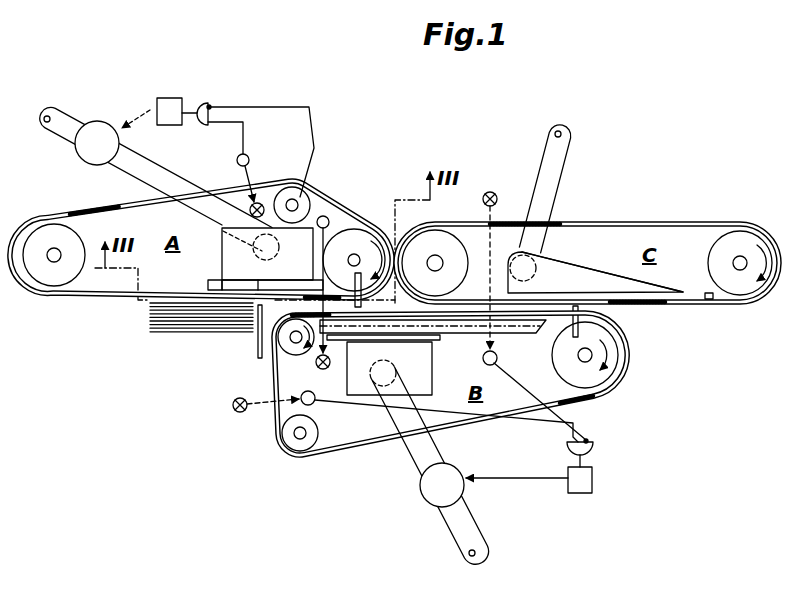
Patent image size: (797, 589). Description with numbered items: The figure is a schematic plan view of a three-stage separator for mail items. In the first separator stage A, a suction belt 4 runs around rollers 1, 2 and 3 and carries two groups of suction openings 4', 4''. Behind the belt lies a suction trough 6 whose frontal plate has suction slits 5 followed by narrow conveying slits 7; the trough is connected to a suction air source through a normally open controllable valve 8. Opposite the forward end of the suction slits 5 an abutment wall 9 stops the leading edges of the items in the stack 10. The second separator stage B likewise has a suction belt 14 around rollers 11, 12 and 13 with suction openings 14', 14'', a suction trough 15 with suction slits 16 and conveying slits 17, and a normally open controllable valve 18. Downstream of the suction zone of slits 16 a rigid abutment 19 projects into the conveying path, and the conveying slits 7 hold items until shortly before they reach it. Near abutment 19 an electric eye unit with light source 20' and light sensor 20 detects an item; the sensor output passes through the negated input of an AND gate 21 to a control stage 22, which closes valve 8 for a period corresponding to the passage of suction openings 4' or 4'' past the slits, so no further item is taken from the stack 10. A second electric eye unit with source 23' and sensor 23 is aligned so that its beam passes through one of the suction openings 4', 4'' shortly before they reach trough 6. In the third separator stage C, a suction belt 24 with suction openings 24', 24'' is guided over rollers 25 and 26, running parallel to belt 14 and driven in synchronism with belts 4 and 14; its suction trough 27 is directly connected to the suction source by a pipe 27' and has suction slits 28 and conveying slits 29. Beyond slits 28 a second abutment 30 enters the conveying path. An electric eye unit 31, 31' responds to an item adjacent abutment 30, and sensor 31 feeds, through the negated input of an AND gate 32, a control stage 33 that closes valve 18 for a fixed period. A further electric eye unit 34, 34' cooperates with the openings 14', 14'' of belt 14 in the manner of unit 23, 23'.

The roller 1 is at (366, 238).
The roller 2 is at (300, 196).
The roller 3 is at (53, 275).
The suction belt 4 is at (201, 257).
The suction openings 4' is at (342, 279).
The suction openings 4'' is at (84, 197).
The suction slits 5 is at (210, 283).
The suction trough 6 is at (232, 253).
The conveying slits 7 is at (285, 289).
The controllable valve 8 is at (99, 128).
The abutment wall 9 is at (255, 346).
The stack 10 is at (190, 327).
The roller 11 is at (287, 344).
The roller 12 is at (288, 446).
The roller 13 is at (612, 357).
The suction belt 14 is at (450, 386).
The suction openings 14' is at (307, 352).
The suction openings 14'' is at (600, 398).
The suction trough 15 is at (422, 372).
The suction slits 16 is at (347, 333).
The conveying slits 17 is at (430, 326).
The controllable valve 18 is at (428, 486).
The abutment 19 is at (351, 308).
The light sensor 20 is at (341, 267).
The light source 20' is at (325, 375).
The AND gate 21 is at (204, 104).
The control stage 22 is at (168, 98).
The light sensor 23 is at (260, 176).
The light source 23' is at (231, 190).
The suction belt 24 is at (587, 289).
The suction openings 24' is at (552, 214).
The suction openings 24'' is at (658, 323).
The roller 25 is at (737, 243).
The roller 26 is at (428, 238).
The suction trough 27 is at (605, 272).
The pipe 27' is at (566, 189).
The suction slits 28 is at (508, 275).
The conveying slits 29 is at (602, 286).
The abutment 30 is at (581, 314).
The light sensor 31 is at (535, 394).
The light source 31' is at (489, 257).
The AND gate 32 is at (593, 448).
The control stage 33 is at (592, 485).
The light sensor 34 is at (439, 416).
The light source 34' is at (251, 421).